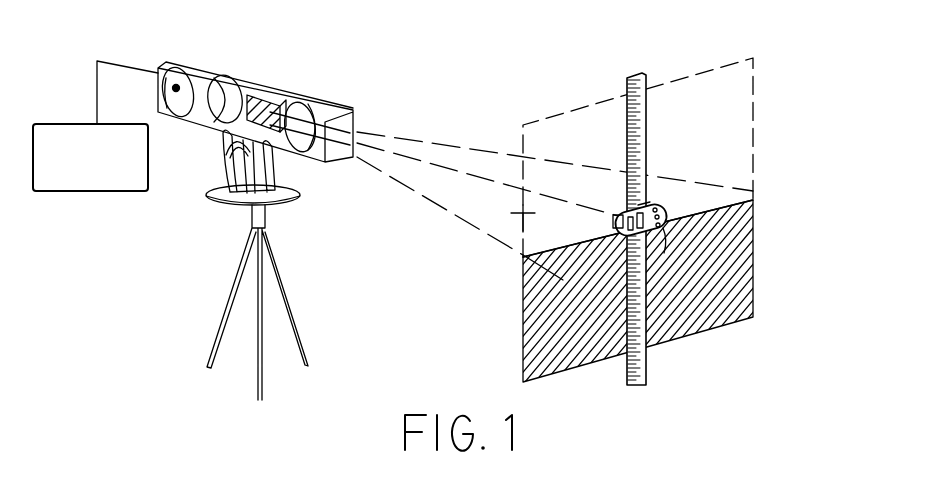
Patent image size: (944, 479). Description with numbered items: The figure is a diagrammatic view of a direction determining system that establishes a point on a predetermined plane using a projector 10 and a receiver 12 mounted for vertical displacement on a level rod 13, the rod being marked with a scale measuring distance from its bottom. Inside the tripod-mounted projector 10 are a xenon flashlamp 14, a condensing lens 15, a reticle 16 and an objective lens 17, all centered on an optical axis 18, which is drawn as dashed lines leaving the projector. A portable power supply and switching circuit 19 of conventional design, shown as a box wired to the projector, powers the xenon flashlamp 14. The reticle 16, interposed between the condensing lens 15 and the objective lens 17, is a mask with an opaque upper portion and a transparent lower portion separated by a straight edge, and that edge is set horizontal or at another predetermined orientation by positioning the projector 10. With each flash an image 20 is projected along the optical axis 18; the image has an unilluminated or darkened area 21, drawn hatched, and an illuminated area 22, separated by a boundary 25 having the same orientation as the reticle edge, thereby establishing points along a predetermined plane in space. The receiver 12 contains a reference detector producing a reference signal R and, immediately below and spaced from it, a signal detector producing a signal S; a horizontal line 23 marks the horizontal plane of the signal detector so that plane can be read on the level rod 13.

The projector 10 is at (353, 111).
The receiver 12 is at (661, 204).
The level rod 13 is at (647, 73).
The xenon flashlamp 14 is at (178, 88).
The condensing lens 15 is at (223, 88).
The reticle 16 is at (260, 120).
The objective lens 17 is at (303, 110).
The optical axis 18 is at (450, 169).
The portable power supply and switching circuit 19 is at (128, 125).
The image 20 is at (757, 68).
The unilluminated or darkened area 21 is at (523, 343).
The illuminated area 22 is at (514, 218).
The horizontal line 23 is at (645, 207).
The boundary 25 is at (750, 201).
The reference signal R is at (613, 214).
The signal S is at (617, 222).